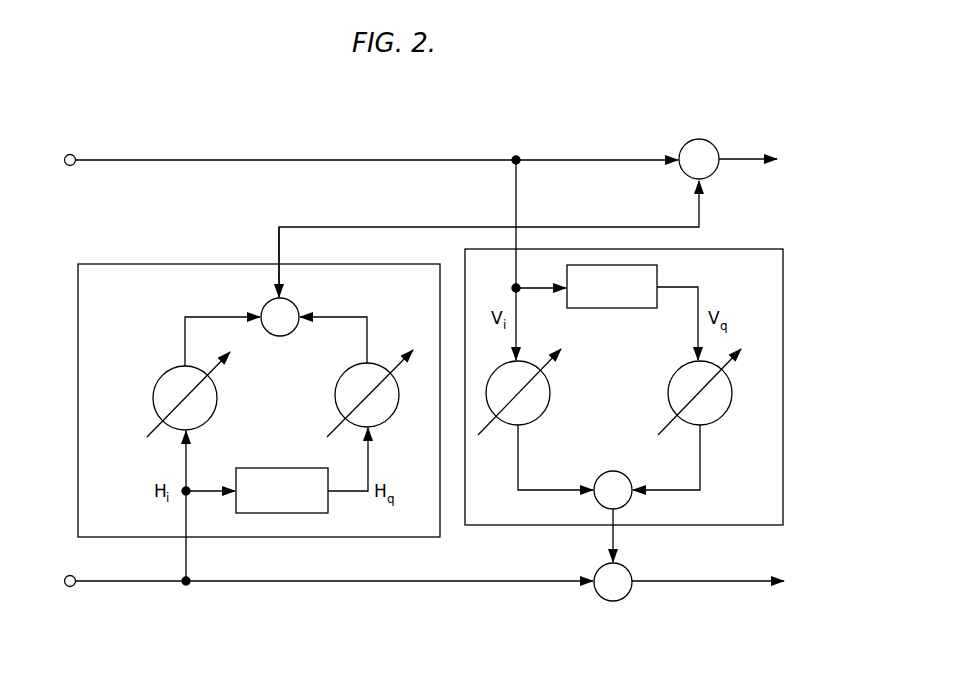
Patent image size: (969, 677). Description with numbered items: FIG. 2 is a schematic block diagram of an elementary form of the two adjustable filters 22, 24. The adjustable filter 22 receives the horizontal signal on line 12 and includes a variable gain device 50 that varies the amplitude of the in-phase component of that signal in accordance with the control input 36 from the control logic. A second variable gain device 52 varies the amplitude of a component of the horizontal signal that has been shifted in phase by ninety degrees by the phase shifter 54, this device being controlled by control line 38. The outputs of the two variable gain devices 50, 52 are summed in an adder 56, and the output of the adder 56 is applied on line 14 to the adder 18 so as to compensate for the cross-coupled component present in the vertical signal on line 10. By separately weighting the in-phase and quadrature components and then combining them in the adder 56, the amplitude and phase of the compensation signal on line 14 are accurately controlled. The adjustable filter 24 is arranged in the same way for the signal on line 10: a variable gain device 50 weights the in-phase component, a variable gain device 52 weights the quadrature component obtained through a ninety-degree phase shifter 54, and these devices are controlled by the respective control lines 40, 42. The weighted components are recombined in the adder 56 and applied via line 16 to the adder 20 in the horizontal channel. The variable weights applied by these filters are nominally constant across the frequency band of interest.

The line 10 is at (171, 160).
The line 12 is at (120, 581).
The line 14 is at (447, 227).
The line 16 is at (610, 533).
The adder 18 is at (714, 145).
The adder 20 is at (620, 601).
The adjustable filter 22 is at (178, 264).
The adjustable filter 24 is at (783, 357).
The control input 36 is at (150, 433).
The control line 38 is at (330, 436).
The control line 40 is at (480, 434).
The control line 42 is at (663, 430).
The variable gain device 50 is at (217, 397).
The variable gain device 52 is at (396, 407).
The phase shifter 54 is at (255, 468).
The adder 56 is at (280, 336).